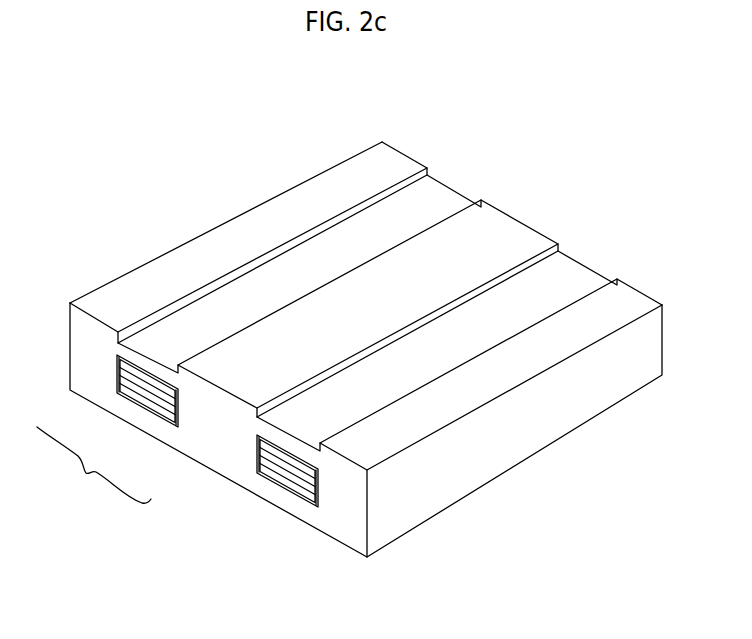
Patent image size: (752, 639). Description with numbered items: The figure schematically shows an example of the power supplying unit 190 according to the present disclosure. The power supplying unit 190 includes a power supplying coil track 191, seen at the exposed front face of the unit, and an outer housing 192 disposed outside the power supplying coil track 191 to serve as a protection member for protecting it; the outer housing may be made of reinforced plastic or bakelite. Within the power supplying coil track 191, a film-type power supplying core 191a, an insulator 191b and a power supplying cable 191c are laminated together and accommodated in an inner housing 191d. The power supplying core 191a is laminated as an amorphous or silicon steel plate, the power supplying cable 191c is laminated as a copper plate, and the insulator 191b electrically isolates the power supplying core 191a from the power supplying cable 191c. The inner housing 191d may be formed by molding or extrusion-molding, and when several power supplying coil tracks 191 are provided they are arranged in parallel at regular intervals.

The power supplying unit 190 is at (217, 200).
The power supplying coil track 191 is at (282, 489).
The power supplying core 191a is at (122, 398).
The insulator 191b is at (150, 398).
The power supplying cable 191c is at (151, 405).
The inner housing 191d is at (118, 375).
The outer housing 192 is at (334, 526).